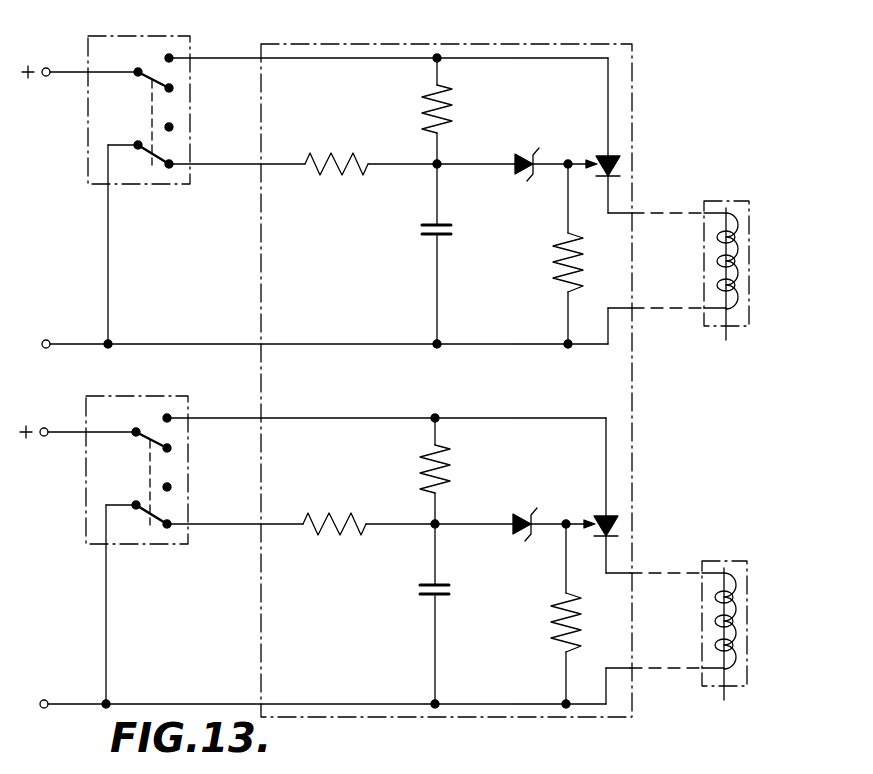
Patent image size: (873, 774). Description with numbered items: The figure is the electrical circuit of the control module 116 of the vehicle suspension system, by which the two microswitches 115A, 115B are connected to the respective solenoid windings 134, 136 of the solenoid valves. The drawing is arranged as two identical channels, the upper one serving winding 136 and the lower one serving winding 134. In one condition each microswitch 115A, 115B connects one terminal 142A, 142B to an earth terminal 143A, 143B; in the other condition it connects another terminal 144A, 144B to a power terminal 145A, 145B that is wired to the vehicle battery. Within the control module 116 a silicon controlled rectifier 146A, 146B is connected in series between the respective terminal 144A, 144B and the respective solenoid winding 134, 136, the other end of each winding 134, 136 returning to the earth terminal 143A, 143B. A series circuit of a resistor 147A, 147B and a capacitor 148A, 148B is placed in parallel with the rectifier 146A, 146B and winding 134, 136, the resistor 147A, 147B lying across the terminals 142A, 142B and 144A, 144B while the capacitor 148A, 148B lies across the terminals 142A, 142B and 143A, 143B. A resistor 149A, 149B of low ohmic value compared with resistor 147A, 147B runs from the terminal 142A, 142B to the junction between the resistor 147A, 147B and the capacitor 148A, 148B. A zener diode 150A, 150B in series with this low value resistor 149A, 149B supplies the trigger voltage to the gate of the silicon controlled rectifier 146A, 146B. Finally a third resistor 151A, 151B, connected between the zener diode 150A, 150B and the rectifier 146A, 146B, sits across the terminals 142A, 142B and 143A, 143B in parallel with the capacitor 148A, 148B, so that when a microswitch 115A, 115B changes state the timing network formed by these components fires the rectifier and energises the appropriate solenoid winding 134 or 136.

The control module 116 is at (446, 44).
The microswitch 115B is at (111, 117).
The microswitch 115A is at (133, 493).
The terminal 144B is at (169, 53).
The terminal 144A is at (190, 435).
The terminal 142B is at (166, 170).
The terminal 142A is at (160, 545).
The power terminal 145B is at (46, 68).
The power terminal 145A is at (77, 415).
The earth terminal 143B is at (46, 340).
The earth terminal 143A is at (63, 690).
The resistor 147B is at (430, 103).
The resistor 147A is at (392, 469).
The capacitor 148B is at (426, 238).
The capacitor 148A is at (398, 611).
The resistor 149B is at (340, 178).
The resistor 149A is at (331, 552).
The zener diode 150B is at (522, 152).
The zener diode 150A is at (519, 507).
The third resistor 151B is at (560, 266).
The third resistor 151A is at (525, 622).
The silicon controlled rectifier 146B is at (622, 165).
The silicon controlled rectifier 146A is at (634, 527).
The solenoid winding 136 is at (704, 266).
The solenoid winding 134 is at (692, 630).